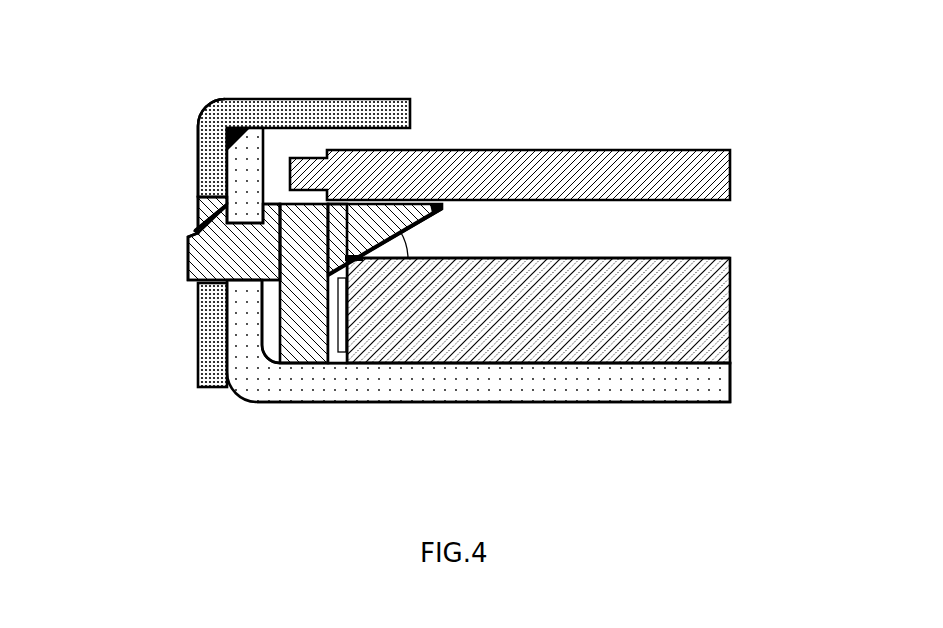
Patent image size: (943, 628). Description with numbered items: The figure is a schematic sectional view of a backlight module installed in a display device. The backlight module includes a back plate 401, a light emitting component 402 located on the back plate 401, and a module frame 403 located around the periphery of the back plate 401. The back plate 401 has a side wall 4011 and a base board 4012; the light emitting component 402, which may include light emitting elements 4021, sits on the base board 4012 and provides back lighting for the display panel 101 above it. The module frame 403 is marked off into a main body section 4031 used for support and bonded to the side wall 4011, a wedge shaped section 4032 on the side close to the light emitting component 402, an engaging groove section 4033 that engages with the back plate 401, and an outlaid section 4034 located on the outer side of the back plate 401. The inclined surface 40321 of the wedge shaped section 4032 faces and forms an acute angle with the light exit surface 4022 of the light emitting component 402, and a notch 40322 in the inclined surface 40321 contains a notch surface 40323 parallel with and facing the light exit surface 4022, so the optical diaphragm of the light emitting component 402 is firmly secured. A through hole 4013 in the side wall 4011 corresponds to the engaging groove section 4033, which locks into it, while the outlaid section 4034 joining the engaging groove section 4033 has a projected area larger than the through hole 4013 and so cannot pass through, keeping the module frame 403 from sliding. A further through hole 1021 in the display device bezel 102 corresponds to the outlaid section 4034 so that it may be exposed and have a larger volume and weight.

The display panel 101 is at (705, 173).
The display device bezel 102 is at (271, 121).
The through hole 1021 is at (215, 193).
The back plate 401 is at (418, 382).
The side wall 4011 is at (250, 347).
The base board 4012 is at (665, 390).
The light emitting component 402 is at (611, 298).
The light emitting elements 4021 is at (333, 323).
The light exit surface 4022 is at (660, 258).
The module frame 403 is at (388, 234).
The through hole 4013 is at (236, 156).
The main body section 4031 is at (297, 367).
The wedge shaped section 4032 is at (498, 146).
The inclined surface 40321 is at (443, 211).
The notch 40322 is at (362, 252).
The notch surface 40323 is at (362, 253).
The engaging groove section 4033 is at (198, 282).
The outlaid section 4034 is at (200, 222).